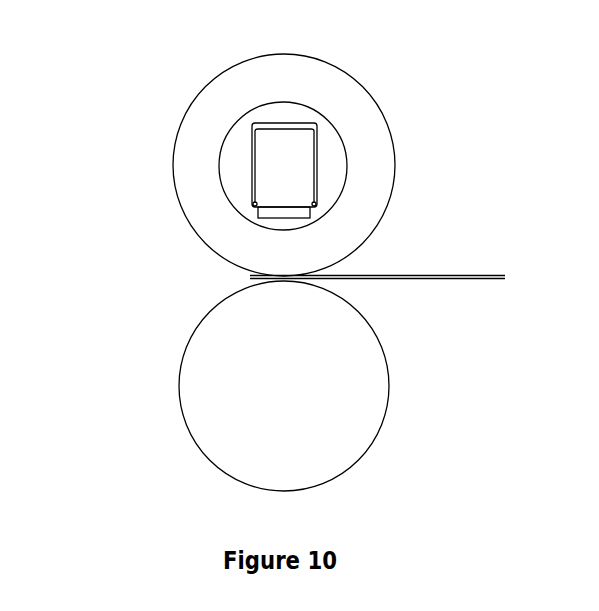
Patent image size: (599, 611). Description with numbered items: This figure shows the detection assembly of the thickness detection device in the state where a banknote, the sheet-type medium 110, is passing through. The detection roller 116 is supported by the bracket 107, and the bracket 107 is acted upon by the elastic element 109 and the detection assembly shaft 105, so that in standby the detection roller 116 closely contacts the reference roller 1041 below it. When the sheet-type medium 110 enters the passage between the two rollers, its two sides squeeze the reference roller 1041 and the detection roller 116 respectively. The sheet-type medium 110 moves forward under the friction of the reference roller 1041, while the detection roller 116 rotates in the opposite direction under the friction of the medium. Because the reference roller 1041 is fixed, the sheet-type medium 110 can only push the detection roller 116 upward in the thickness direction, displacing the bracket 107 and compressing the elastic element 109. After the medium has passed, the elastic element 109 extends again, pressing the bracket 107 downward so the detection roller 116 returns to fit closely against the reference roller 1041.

The detection roller 116 is at (234, 149).
The bracket 107 is at (349, 115).
The detection assembly shaft 105 is at (207, 177).
The elastic element 109 is at (374, 189).
The sheet-type medium 110 is at (390, 310).
The reference roller 1041 is at (207, 386).